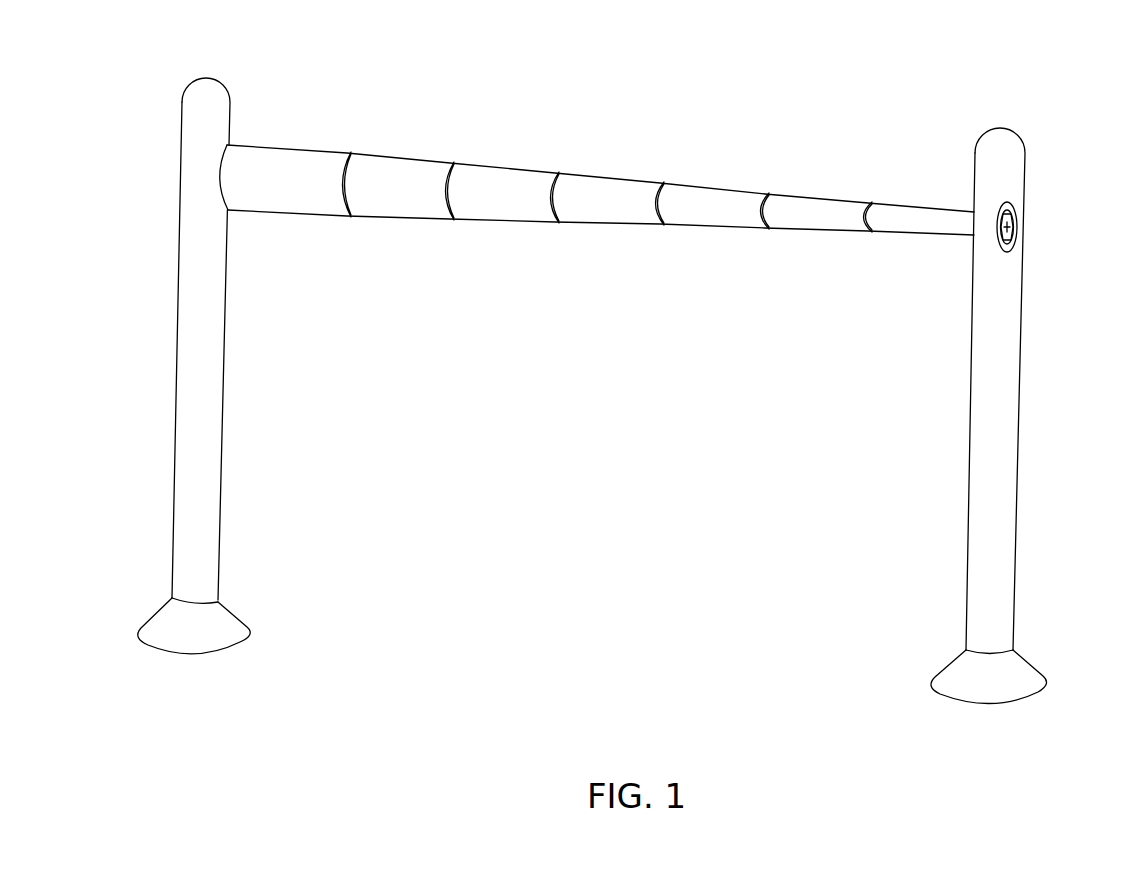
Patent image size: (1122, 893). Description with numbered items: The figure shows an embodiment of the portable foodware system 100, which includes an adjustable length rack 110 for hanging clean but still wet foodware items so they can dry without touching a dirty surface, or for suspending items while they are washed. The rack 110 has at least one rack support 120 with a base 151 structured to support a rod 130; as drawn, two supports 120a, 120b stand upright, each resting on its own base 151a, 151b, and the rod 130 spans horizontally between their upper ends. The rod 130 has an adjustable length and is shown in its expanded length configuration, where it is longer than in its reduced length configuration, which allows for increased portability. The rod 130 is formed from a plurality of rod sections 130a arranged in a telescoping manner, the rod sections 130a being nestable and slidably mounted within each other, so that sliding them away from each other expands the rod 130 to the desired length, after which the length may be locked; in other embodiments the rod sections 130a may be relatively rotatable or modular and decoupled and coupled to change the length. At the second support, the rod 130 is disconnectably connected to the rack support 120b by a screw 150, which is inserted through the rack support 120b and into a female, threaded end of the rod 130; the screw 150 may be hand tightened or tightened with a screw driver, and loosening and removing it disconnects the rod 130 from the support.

The portable foodware system 100 is at (277, 46).
The adjustable length rack 110 is at (801, 137).
The rack support 120 is at (194, 368).
The rack support 120a is at (178, 297).
The rack support 120b is at (1022, 345).
The rod 130 is at (396, 142).
The rod section 130a is at (290, 213).
The screw 150 is at (1018, 232).
The base 151 is at (157, 620).
The base 151a is at (233, 615).
The base 151b is at (1030, 668).